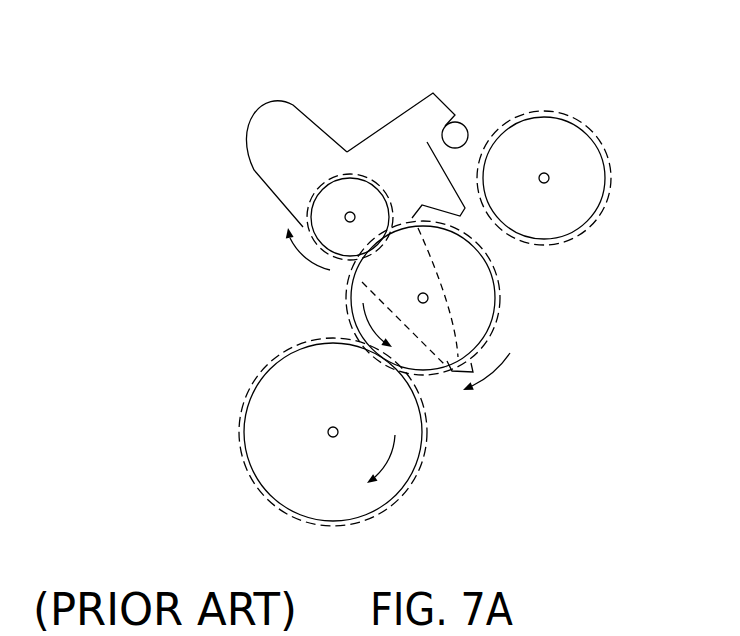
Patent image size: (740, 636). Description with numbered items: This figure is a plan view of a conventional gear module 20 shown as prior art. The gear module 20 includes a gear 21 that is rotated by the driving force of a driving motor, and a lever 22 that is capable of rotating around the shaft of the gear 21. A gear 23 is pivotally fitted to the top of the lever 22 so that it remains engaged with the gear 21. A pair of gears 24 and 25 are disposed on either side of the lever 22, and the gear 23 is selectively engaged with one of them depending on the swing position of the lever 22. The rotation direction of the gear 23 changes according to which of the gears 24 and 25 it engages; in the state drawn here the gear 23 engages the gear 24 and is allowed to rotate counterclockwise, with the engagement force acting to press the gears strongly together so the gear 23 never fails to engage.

The gear module 20 is at (492, 59).
The gear 21 is at (355, 185).
The lever 22 is at (283, 187).
The gear 23 is at (480, 282).
The gear 24 is at (323, 505).
The gear 25 is at (575, 136).